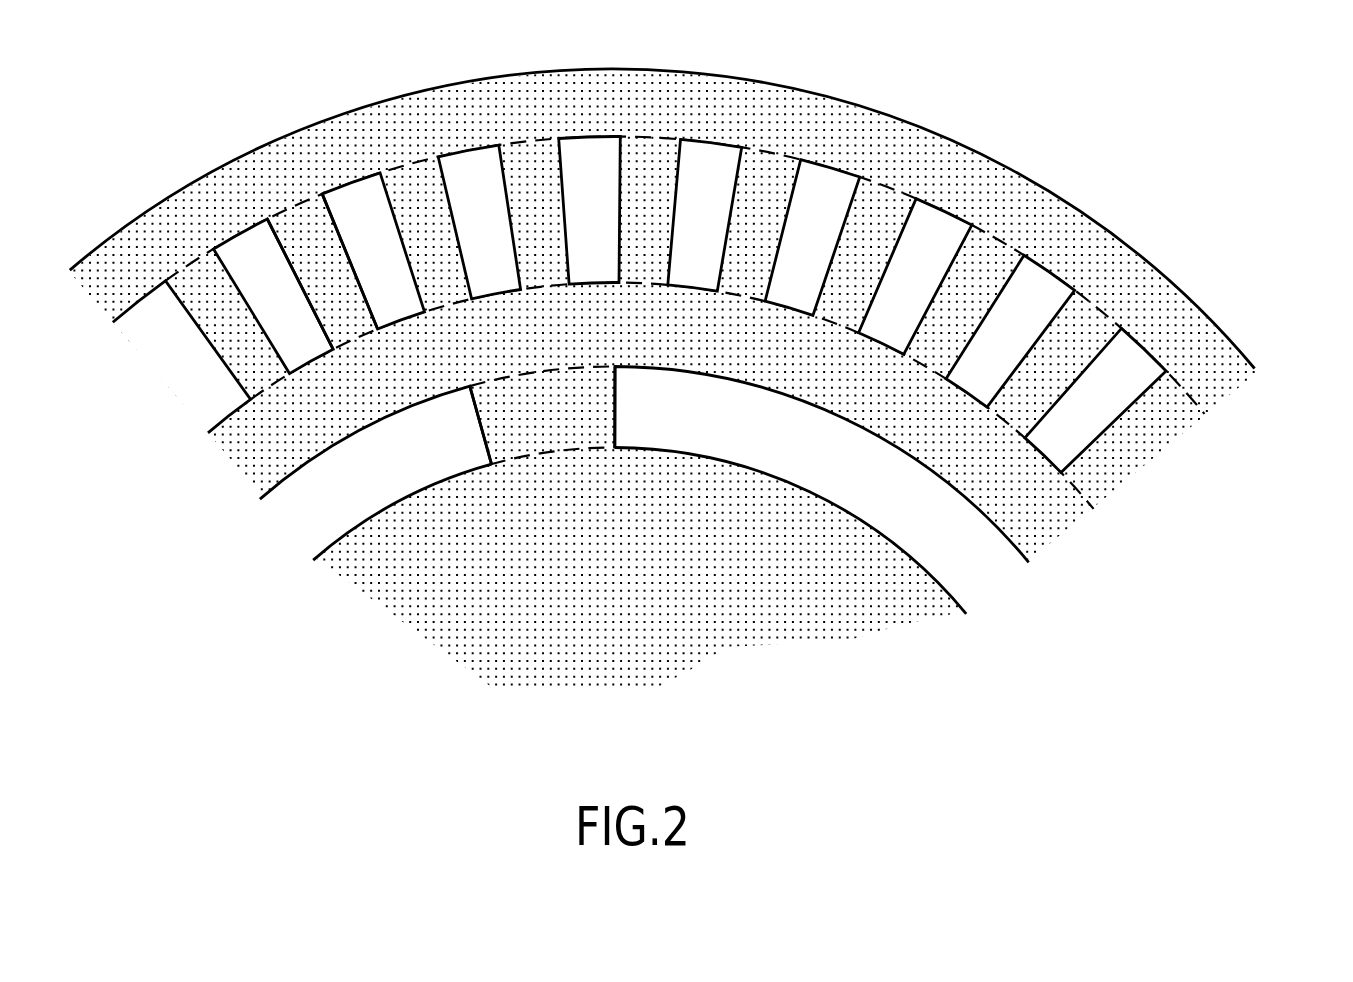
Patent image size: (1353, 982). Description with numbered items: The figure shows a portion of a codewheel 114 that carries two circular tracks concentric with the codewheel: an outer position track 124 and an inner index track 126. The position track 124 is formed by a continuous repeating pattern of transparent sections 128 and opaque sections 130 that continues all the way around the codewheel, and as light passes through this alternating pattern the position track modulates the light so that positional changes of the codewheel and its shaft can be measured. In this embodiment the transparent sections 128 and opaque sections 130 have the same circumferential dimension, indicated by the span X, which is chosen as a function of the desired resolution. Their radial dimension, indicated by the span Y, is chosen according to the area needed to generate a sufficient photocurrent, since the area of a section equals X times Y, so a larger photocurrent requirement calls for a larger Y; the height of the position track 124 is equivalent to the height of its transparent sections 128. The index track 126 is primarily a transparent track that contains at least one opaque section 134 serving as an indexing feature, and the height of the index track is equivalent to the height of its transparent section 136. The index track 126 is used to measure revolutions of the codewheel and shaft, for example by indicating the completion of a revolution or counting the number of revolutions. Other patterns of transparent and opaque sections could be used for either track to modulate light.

The codewheel 114 is at (205, 170).
The position track 124 is at (888, 187).
The index track 126 is at (1025, 546).
The transparent sections 128 is at (240, 233).
The opaque sections 130 is at (289, 207).
The opaque section 134 is at (550, 362).
The transparent section 136 is at (449, 488).
The width dimension X is at (510, 214).
The height dimension Y is at (352, 185).